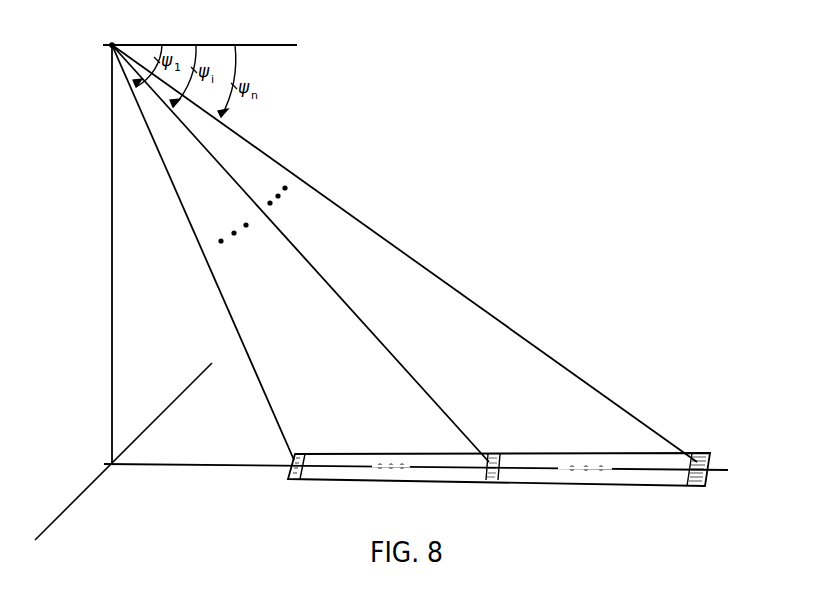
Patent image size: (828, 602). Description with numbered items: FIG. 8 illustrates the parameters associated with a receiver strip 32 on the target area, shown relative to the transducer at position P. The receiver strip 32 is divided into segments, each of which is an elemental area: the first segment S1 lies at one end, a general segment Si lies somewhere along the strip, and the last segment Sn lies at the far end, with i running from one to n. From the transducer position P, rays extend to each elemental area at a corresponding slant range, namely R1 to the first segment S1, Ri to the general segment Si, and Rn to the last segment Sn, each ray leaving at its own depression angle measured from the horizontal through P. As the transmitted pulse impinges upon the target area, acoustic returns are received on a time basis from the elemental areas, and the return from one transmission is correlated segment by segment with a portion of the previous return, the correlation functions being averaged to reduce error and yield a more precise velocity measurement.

The receiver strip 32 is at (563, 488).
The transducer position P is at (112, 45).
The slant range to first elemental area R1 is at (218, 292).
The slant range to i-th elemental area Ri is at (325, 278).
The slant range to n-th elemental area Rn is at (392, 244).
The first elemental area S1 is at (293, 480).
The i-th elemental area Si is at (486, 480).
The n-th elemental area Sn is at (691, 484).